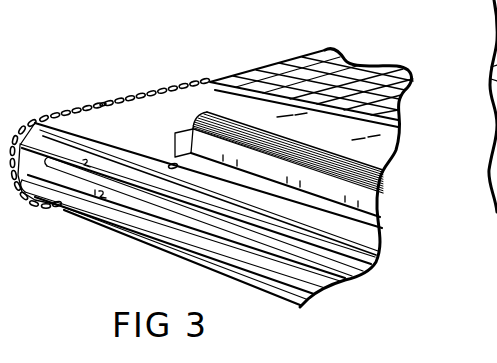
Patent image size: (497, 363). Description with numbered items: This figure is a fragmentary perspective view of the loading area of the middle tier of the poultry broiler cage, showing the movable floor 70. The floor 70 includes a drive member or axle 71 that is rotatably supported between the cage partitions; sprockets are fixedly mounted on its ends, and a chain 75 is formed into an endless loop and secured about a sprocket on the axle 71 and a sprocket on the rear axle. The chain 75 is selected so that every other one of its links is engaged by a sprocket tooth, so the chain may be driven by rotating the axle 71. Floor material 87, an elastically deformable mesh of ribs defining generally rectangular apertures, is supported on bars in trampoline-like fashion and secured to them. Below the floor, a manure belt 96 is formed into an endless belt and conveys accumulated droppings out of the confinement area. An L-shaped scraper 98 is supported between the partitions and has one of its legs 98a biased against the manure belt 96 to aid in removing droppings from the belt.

The floor material 87 is at (292, 49).
The manure belt 96 is at (242, 128).
The movable floor 70 is at (206, 81).
The chain 75 is at (97, 103).
The drive member or axle 71 is at (135, 242).
The L-shaped scraper 98 is at (324, 209).
The leg of scraper 98a is at (355, 194).